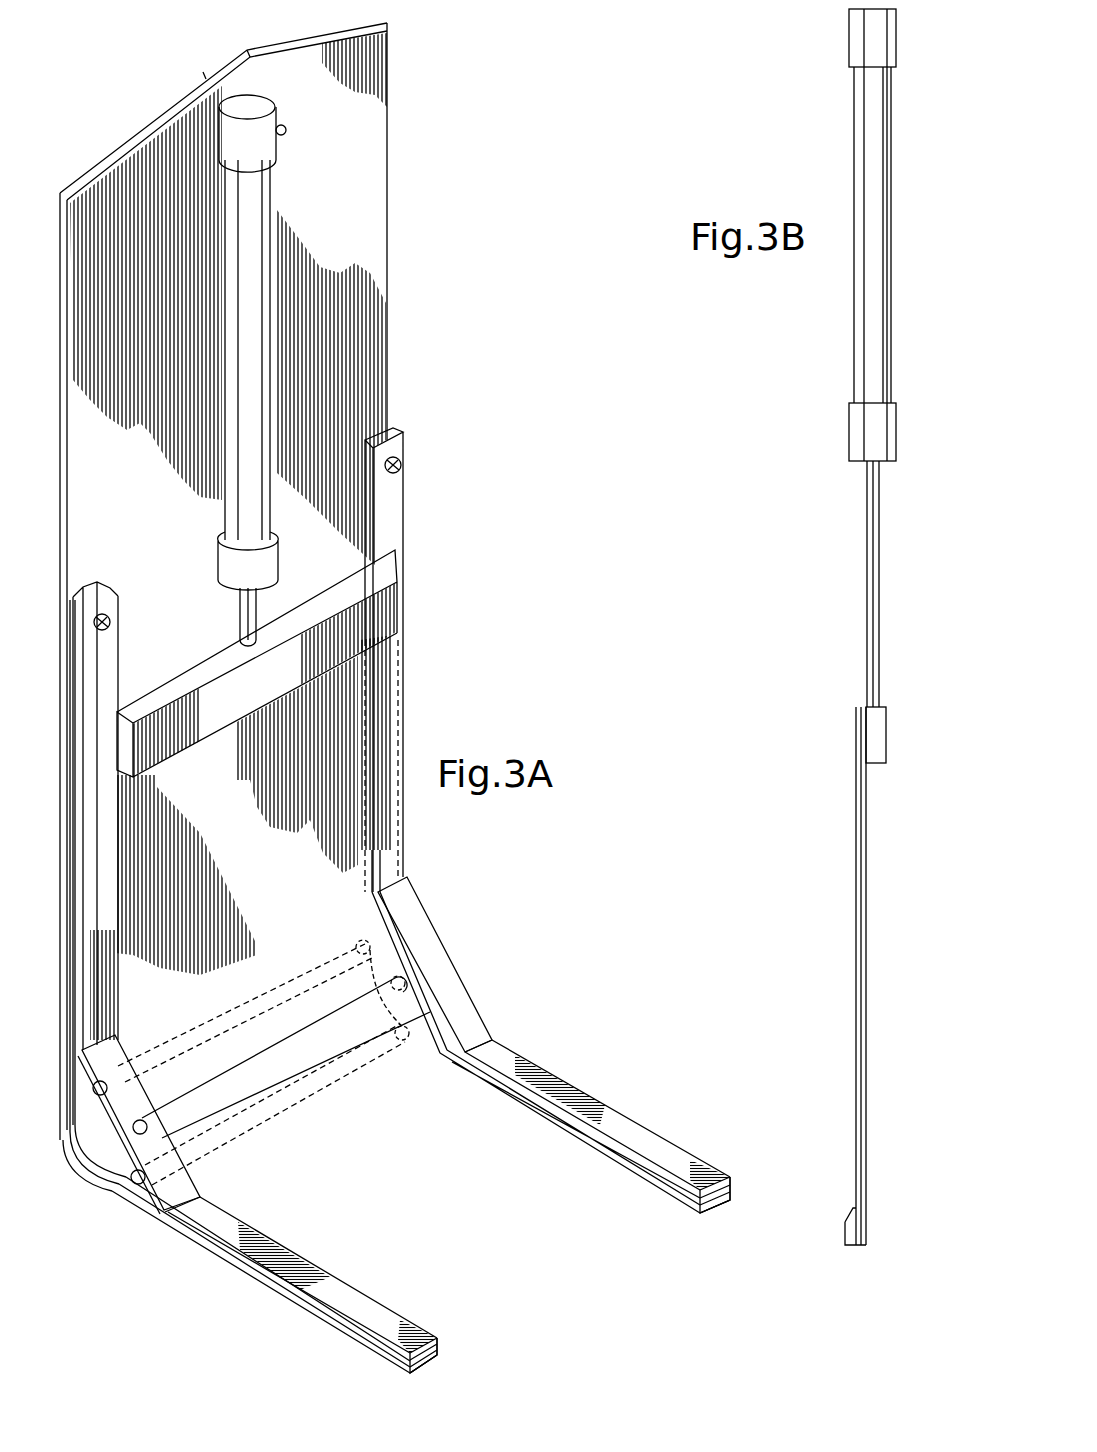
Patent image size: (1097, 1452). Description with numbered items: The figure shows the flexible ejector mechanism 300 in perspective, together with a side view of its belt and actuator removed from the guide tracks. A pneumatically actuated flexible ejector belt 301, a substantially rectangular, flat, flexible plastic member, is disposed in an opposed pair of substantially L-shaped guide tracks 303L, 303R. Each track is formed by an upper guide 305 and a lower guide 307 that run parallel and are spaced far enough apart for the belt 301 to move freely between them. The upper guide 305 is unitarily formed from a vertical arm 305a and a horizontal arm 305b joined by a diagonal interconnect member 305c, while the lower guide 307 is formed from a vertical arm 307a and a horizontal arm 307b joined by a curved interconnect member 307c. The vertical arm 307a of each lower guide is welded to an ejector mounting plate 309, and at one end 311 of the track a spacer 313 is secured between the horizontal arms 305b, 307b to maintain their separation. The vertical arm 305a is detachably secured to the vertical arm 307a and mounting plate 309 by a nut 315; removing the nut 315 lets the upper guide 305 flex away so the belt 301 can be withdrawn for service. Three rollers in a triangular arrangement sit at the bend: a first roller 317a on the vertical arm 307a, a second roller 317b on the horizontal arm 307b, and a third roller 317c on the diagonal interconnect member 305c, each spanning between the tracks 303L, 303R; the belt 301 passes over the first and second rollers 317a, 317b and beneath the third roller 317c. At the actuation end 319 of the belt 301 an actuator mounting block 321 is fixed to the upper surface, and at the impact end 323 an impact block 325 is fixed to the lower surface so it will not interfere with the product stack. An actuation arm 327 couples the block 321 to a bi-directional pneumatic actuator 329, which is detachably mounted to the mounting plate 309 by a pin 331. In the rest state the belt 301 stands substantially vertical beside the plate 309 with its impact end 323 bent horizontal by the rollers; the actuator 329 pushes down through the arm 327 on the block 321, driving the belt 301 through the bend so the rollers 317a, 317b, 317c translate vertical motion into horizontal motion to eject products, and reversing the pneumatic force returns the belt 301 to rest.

In FIG. 3A, the flexible ejector mechanism 300 is at (476, 556).
In FIG. 3A, the flexible ejector belt 301 is at (320, 848).
In FIG. 3B, the flexible ejector belt 301 is at (848, 870).
In FIG. 3A, the left L-shaped guide track 303L is at (137, 1238).
In FIG. 3A, the right L-shaped guide track 303R is at (556, 1048).
In FIG. 3A, the upper guide 305 is at (405, 900).
In FIG. 3A, the vertical arm of upper guide 305a is at (398, 503).
In FIG. 3A, the horizontal arm of upper guide 305b is at (640, 1130).
In FIG. 3A, the diagonal interconnect member 305c is at (452, 983).
In FIG. 3A, the lower guide 307 is at (369, 873).
In FIG. 3A, the vertical arm of lower guide 307a is at (385, 405).
In FIG. 3A, the horizontal arm of lower guide 307b is at (603, 1168).
In FIG. 3A, the curved interconnect member 307c is at (82, 1178).
In FIG. 3A, the ejector mounting plate 309 is at (370, 140).
In FIG. 3A, the end of guide track 311 is at (722, 1208).
In FIG. 3A, the spacer 313 is at (700, 1200).
In FIG. 3A, the nut 315 is at (403, 466).
In FIG. 3A, the first roller 317a is at (300, 975).
In FIG. 3A, the second roller 317b is at (342, 1068).
In FIG. 3A, the third roller 317c is at (405, 957).
In FIG. 3B, the actuation end of belt 319 is at (839, 973).
In FIG. 3A, the actuator mounting block 321 is at (388, 612).
In FIG. 3B, the actuator mounting block 321 is at (880, 752).
In FIG. 3B, the impact end of belt 323 is at (823, 1267).
In FIG. 3A, the impact block 325 is at (280, 1152).
In FIG. 3B, the impact block 325 is at (855, 1252).
In FIG. 3A, the actuation arm 327 is at (236, 606).
In FIG. 3B, the actuation arm 327 is at (862, 548).
In FIG. 3A, the bi-directional pneumatic actuator 329 is at (268, 190).
In FIG. 3B, the bi-directional pneumatic actuator 329 is at (845, 437).
In FIG. 3A, the pin 331 is at (286, 128).